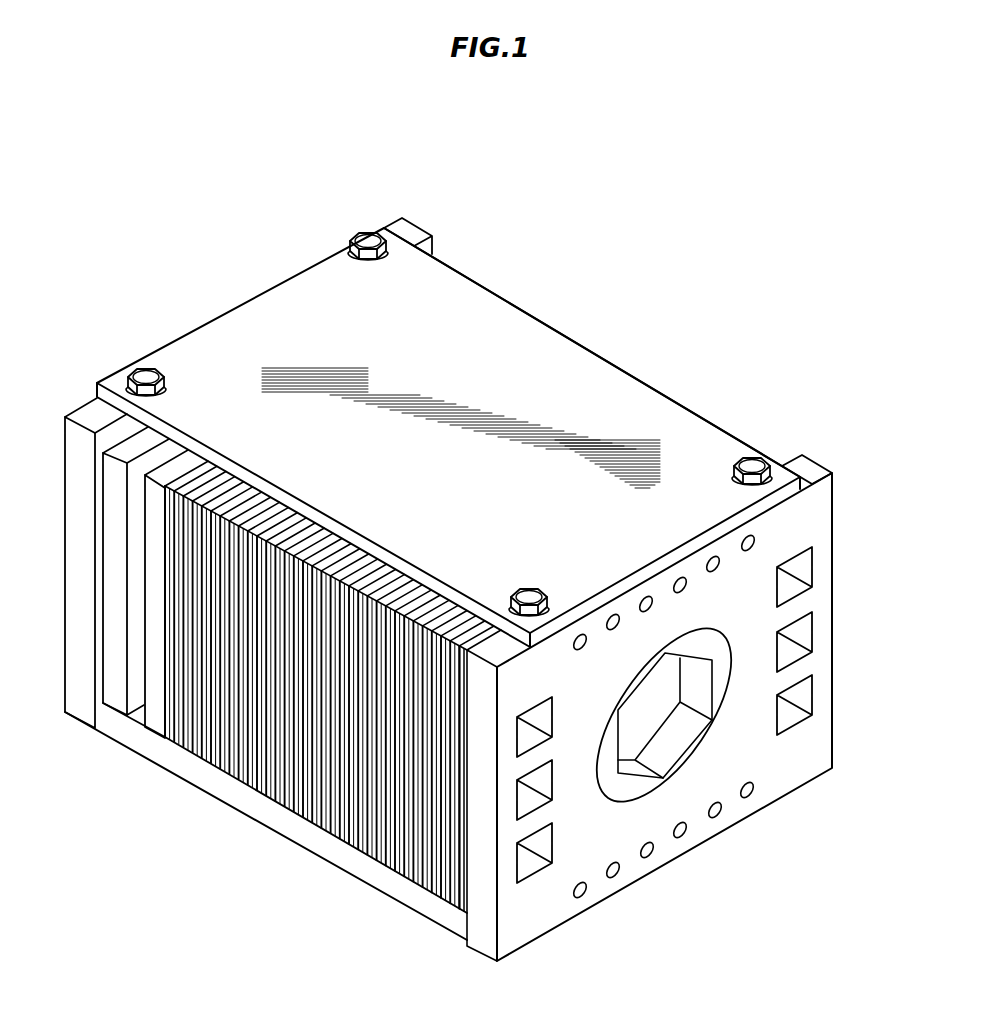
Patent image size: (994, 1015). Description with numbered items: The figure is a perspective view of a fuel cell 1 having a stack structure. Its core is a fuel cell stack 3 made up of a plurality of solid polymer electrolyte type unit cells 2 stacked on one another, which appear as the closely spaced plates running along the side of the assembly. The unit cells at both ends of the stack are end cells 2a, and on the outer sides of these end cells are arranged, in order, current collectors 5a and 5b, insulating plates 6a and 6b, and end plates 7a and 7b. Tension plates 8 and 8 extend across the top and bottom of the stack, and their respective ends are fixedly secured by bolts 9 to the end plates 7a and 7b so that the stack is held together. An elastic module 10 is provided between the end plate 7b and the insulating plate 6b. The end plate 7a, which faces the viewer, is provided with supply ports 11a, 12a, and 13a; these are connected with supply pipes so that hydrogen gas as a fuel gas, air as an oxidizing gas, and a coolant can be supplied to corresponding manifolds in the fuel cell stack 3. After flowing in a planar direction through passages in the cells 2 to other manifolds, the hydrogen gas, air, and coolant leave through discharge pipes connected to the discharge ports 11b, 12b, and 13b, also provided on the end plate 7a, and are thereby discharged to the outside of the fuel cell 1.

The fuel cell 1 is at (180, 279).
The unit cells 2 is at (358, 570).
The end cells 2a is at (182, 742).
The fuel cell stack 3 is at (310, 847).
The current collector 5a is at (450, 900).
The current collector 5b is at (175, 743).
The insulating plate 6a is at (463, 900).
The insulating plate 6b is at (167, 748).
The end plate 7a is at (806, 464).
The end plate 7b is at (428, 232).
The tension plate 8 is at (568, 366).
The bolt 9 is at (368, 238).
The elastic module 10 is at (128, 740).
The supply port 11a is at (545, 717).
The discharge port 11b is at (802, 695).
The supply port 12a is at (533, 867).
The discharge port 12b is at (802, 560).
The supply port 13a is at (545, 780).
The discharge port 13b is at (800, 632).